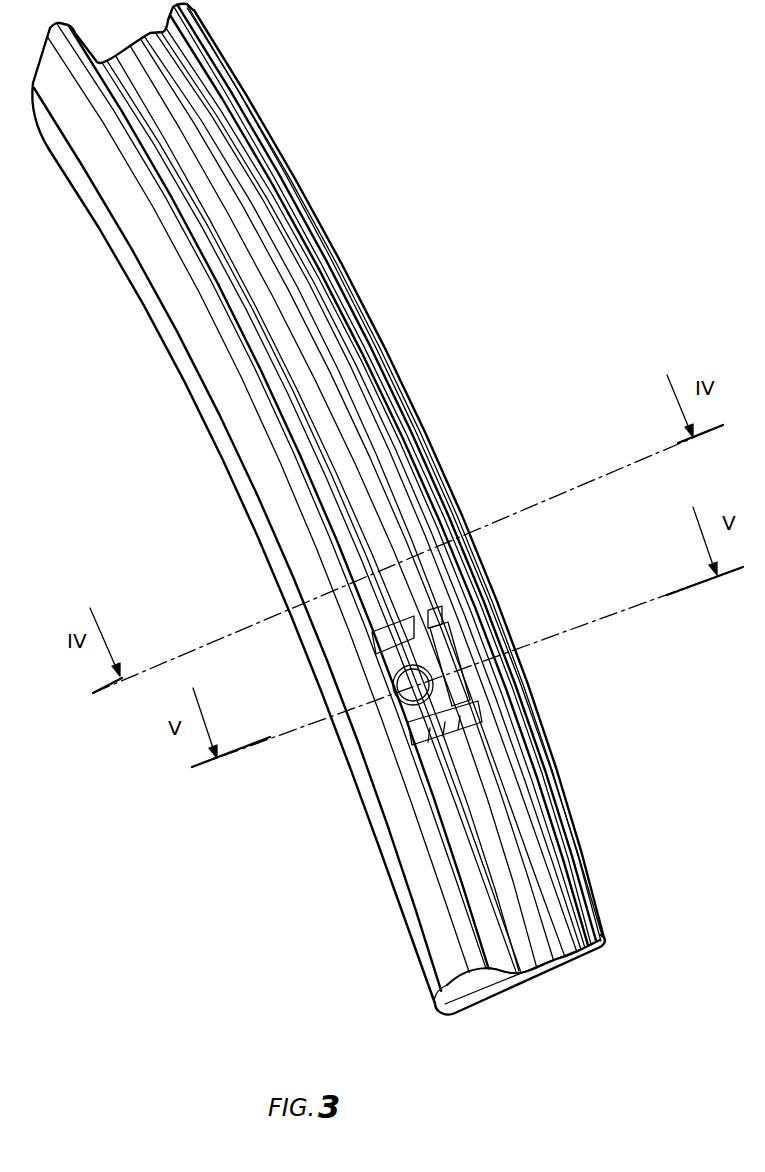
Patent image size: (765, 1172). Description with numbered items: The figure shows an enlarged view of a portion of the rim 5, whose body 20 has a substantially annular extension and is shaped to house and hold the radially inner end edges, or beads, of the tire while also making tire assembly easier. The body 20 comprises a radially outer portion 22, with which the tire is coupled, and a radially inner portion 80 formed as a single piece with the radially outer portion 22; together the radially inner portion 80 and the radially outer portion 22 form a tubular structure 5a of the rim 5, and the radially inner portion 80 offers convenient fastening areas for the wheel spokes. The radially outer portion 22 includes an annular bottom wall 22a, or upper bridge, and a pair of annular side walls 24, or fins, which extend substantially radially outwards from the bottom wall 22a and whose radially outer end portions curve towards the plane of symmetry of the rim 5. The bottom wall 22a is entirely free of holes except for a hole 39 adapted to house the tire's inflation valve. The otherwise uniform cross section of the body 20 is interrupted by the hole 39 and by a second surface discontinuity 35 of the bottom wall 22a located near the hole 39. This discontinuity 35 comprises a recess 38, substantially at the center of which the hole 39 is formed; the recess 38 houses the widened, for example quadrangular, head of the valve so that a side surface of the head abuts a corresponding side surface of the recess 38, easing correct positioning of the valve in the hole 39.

The rim 5 is at (330, 558).
The tubular structure 5a is at (508, 1002).
The body 20 is at (122, 203).
The radially outer portion 22 is at (260, 250).
The annular bottom wall 22a is at (527, 960).
The annular side walls 24 is at (330, 293).
The second surface discontinuity 35 is at (434, 623).
The recess 38 is at (475, 640).
The hole 39 is at (397, 688).
The radially inner portion 80 is at (388, 905).